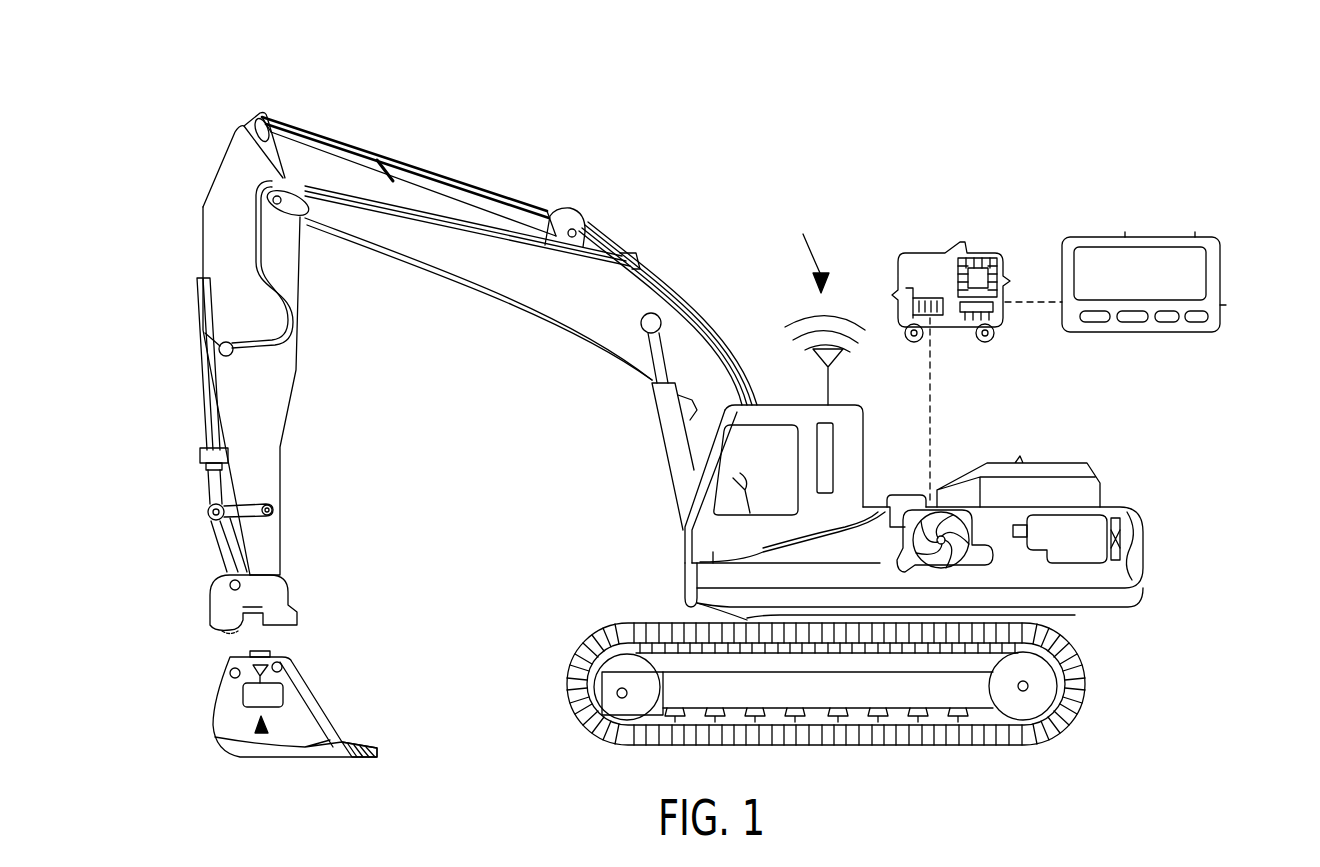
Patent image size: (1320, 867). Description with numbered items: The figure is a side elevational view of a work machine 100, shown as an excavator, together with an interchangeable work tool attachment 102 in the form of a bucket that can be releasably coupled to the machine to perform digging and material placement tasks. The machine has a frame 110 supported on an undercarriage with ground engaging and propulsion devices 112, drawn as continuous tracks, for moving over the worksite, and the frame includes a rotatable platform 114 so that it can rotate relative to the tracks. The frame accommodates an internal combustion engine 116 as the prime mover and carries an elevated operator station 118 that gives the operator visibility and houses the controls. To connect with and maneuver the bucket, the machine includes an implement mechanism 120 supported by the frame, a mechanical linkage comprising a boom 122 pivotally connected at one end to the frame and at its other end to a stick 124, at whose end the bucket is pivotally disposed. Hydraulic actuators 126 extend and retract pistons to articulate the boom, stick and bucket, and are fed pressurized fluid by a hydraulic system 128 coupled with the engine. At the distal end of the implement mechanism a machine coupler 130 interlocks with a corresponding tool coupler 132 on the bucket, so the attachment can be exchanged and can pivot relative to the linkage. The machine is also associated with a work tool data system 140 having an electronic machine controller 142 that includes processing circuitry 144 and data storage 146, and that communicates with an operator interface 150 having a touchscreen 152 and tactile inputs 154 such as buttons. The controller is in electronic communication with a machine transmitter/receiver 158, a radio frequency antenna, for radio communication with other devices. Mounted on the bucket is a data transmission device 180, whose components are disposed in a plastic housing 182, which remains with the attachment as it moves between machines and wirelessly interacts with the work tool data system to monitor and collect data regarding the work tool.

The work machine 100 is at (808, 248).
The work tool attachment 102 is at (320, 697).
The frame 110 is at (1127, 600).
The ground engaging and propulsion devices 112 is at (927, 740).
The rotatable platform 114 is at (743, 612).
The internal combustion engine 116 is at (1100, 533).
The operator station 118 is at (863, 450).
The implement mechanism 120 is at (738, 87).
The boom 122 is at (655, 312).
The stick 124 is at (222, 162).
The actuators 126 is at (472, 190).
The hydraulic system 128 is at (937, 517).
The machine coupler 130 is at (262, 607).
The tool coupler 132 is at (270, 657).
The work tool data system 140 is at (1202, 190).
The electronic machine controller 142 is at (933, 270).
The circuitry 144 is at (977, 280).
The data storage 146 is at (913, 300).
The operator interface 150 is at (1212, 237).
The touchscreen 152 is at (1197, 272).
The tactile inputs 154 is at (1100, 318).
The machine transmitter/receiver 158 is at (833, 388).
The data transmission device 180 is at (258, 733).
The plastic housing 182 is at (240, 693).